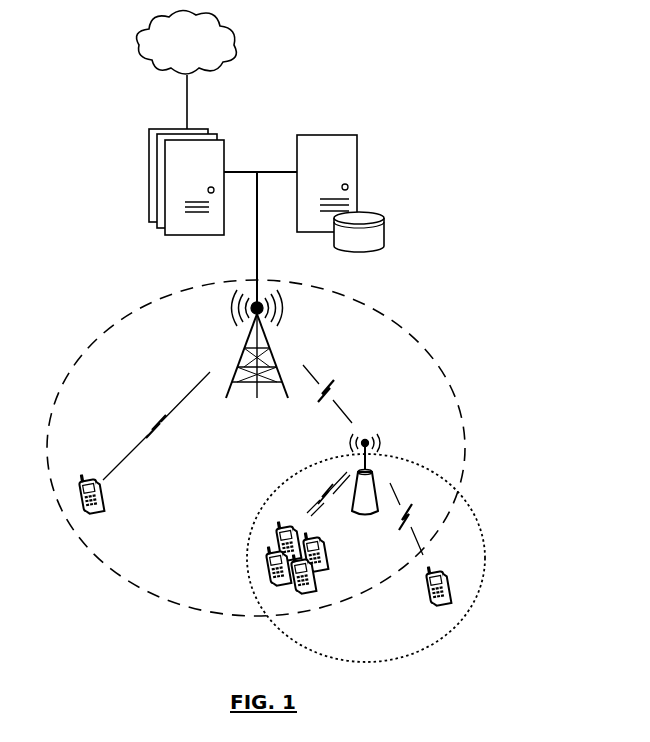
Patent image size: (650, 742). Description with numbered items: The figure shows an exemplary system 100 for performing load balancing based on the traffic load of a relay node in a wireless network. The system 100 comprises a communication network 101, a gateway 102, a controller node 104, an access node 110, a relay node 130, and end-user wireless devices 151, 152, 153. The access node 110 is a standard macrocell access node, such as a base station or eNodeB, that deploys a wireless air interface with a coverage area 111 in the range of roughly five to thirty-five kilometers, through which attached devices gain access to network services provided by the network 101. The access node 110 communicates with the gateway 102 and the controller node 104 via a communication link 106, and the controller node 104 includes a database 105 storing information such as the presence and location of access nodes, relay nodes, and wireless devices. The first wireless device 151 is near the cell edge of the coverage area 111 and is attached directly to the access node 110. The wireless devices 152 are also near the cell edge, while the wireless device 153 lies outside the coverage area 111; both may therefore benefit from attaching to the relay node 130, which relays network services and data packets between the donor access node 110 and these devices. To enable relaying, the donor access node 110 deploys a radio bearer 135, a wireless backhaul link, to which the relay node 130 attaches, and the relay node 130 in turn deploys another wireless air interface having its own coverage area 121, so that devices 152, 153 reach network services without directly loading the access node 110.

The system 100 is at (285, 80).
The communication network 101 is at (170, 55).
The gateway 102 is at (149, 128).
The controller node 104 is at (357, 135).
The database 105 is at (384, 216).
The communication link 106 is at (257, 248).
The access node 110 is at (248, 352).
The coverage area 111 is at (117, 573).
The coverage area 121 is at (466, 507).
The relay node 130 is at (372, 468).
The radio bearer 135 is at (323, 397).
The first wireless device 151 is at (97, 512).
The wireless devices 152 is at (327, 545).
The wireless device 153 is at (430, 607).